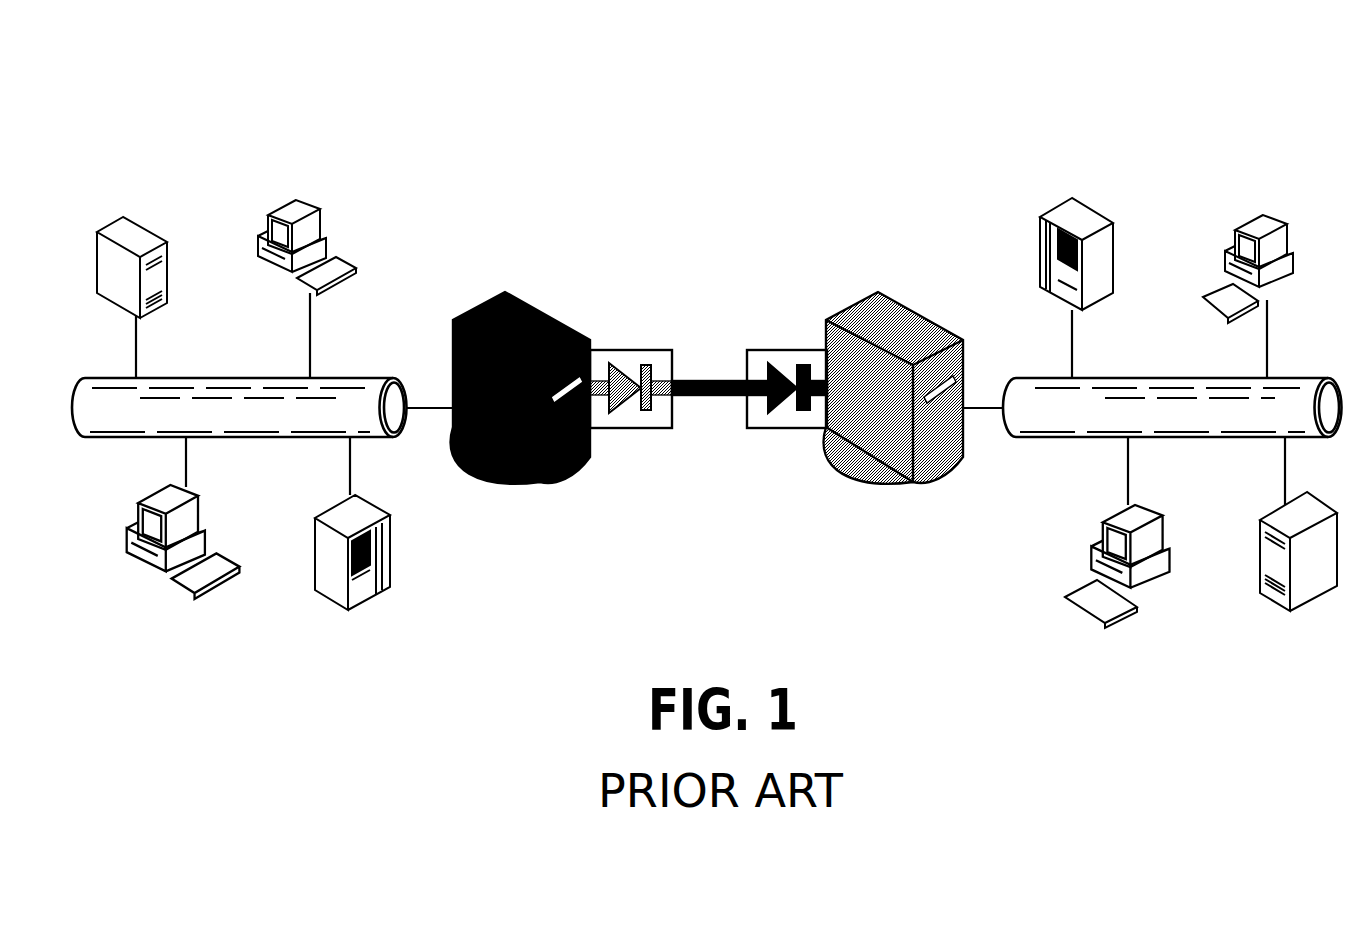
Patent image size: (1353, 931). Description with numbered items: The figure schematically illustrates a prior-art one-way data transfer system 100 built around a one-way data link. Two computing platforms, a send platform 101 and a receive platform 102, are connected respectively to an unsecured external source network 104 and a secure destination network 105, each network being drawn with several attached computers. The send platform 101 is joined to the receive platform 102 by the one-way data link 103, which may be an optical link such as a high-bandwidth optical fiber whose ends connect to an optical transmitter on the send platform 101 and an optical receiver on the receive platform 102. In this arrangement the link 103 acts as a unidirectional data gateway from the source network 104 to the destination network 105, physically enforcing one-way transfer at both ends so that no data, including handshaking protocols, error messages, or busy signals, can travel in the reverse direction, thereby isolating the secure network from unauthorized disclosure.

The one-way data transfer system 100 is at (720, 143).
The send platform 101 is at (524, 300).
The receive platform 102 is at (867, 300).
The one-way data link 103 is at (711, 398).
The source network 104 is at (216, 405).
The destination network 105 is at (1138, 400).